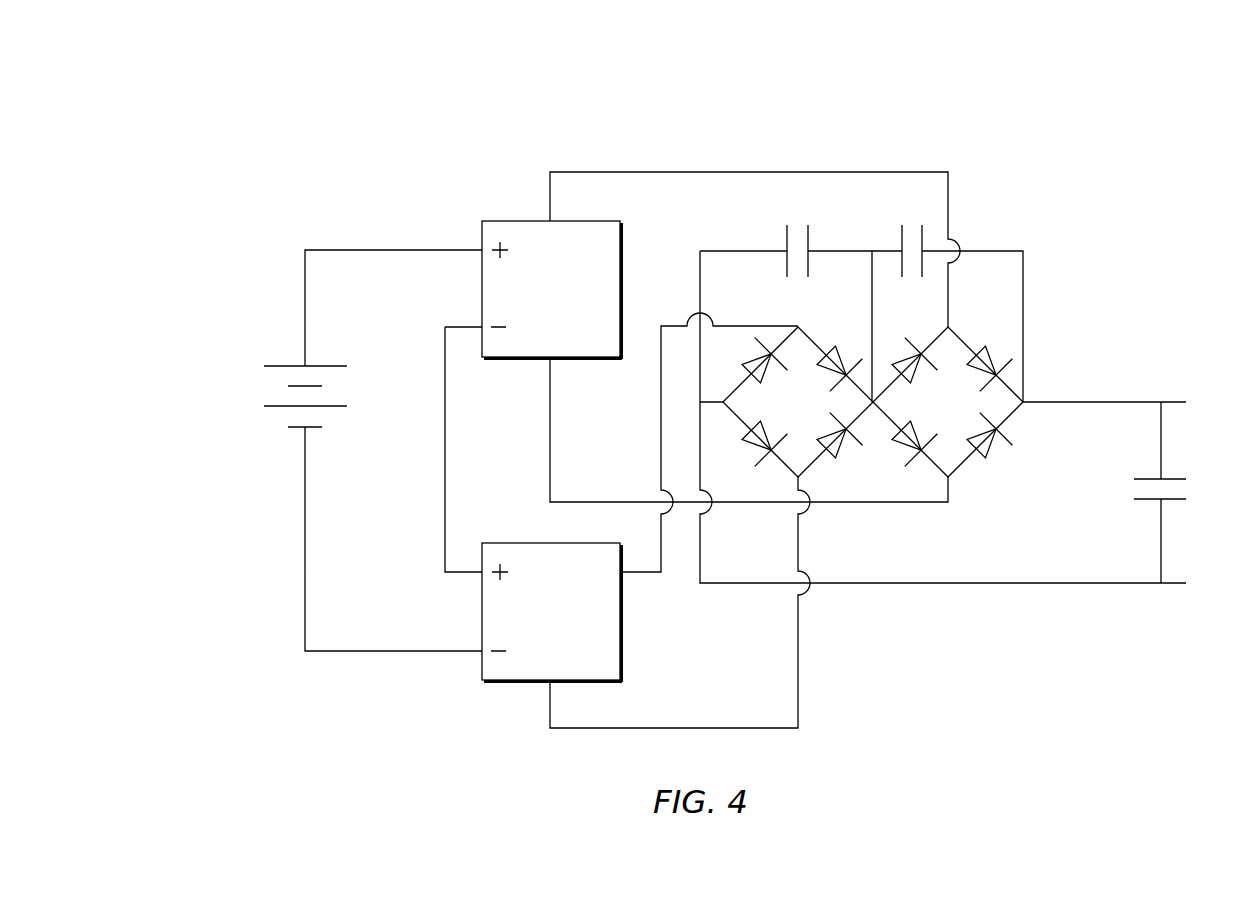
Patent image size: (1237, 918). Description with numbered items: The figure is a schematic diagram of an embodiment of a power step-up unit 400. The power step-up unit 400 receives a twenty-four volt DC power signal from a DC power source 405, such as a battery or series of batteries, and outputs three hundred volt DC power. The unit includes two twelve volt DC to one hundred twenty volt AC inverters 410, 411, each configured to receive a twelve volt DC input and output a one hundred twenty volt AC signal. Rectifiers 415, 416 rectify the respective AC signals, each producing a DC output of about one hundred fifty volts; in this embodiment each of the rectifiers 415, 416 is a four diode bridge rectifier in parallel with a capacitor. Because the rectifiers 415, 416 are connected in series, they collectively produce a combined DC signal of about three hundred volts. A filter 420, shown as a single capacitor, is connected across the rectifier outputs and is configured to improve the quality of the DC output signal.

The power step-up unit 400 is at (469, 104).
The DC power source 405 is at (238, 405).
The inverter 410 is at (495, 220).
The inverter 411 is at (493, 682).
The rectifier 415 is at (853, 455).
The rectifier 416 is at (1005, 457).
The filter 420 is at (1148, 478).